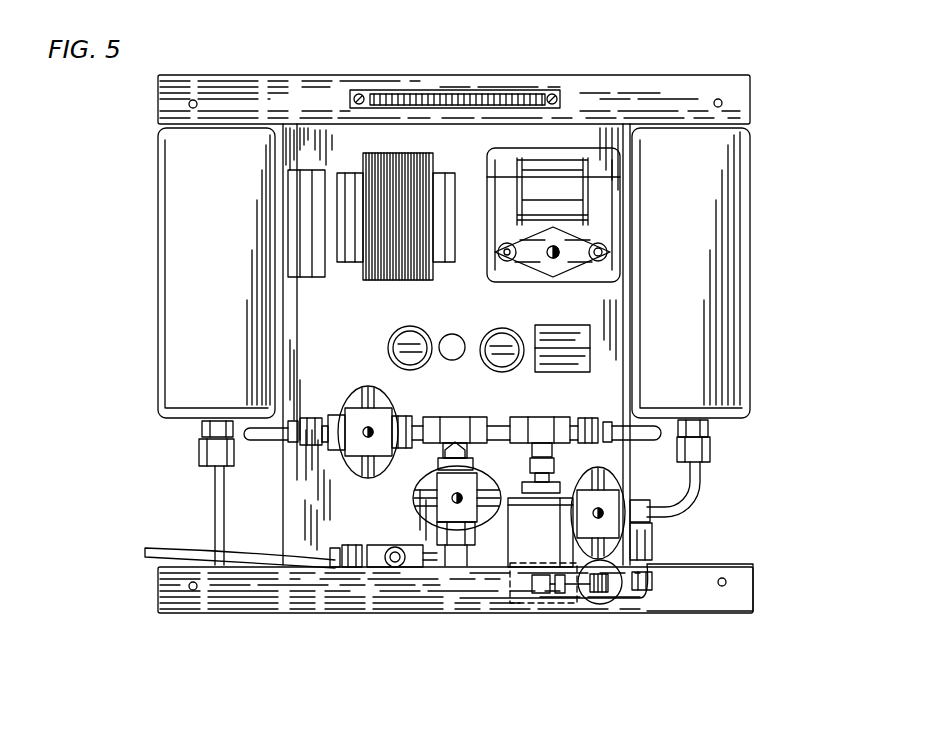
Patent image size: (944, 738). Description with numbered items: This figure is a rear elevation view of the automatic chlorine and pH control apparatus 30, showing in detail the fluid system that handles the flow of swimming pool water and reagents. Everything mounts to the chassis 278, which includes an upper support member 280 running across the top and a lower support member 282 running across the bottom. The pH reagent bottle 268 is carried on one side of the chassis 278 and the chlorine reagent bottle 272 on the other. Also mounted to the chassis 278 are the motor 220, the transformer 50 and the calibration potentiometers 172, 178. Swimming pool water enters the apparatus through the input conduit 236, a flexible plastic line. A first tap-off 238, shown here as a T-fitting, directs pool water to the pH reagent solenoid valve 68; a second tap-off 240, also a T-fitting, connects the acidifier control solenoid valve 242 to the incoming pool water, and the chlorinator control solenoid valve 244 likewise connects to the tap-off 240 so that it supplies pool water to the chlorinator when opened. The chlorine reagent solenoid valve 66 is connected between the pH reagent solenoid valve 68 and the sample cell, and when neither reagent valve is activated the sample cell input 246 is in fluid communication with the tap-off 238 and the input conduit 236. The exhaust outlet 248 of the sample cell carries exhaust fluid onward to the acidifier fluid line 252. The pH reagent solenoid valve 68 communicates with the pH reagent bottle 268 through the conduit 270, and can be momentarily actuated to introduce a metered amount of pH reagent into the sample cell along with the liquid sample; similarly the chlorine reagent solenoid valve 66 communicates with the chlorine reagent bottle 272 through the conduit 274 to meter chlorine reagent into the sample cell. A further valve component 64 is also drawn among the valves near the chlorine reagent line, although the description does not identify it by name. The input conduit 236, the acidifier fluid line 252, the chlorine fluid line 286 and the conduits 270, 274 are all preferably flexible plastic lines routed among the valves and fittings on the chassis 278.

The automatic chlorine and pH control apparatus 30 is at (594, 55).
The transformer 50 is at (372, 170).
The valve 64 is at (617, 477).
The chlorine reagent solenoid valve 66 is at (614, 590).
The pH reagent solenoid valve 68 is at (532, 552).
The calibration potentiometer 172 is at (494, 332).
The calibration potentiometer 178 is at (395, 338).
The motor 220 is at (587, 274).
The input conduit 236 is at (660, 430).
The first tap-off 238 is at (543, 417).
The second tap-off 240 is at (453, 418).
The acidifier control solenoid valve 242 is at (468, 546).
The chlorinator control solenoid valve 244 is at (352, 478).
The sample cell input 246 is at (657, 565).
The exhaust outlet 248 is at (647, 523).
The acidifier fluid line 252 is at (145, 554).
The pH reagent bottle 268 is at (172, 247).
The conduit 270 is at (214, 500).
The chlorine reagent bottle 272 is at (745, 257).
The conduit 274 is at (697, 476).
The chassis 278 is at (297, 507).
The upper support member 280 is at (746, 92).
The lower support member 282 is at (753, 592).
The chlorine fluid line 286 is at (260, 433).